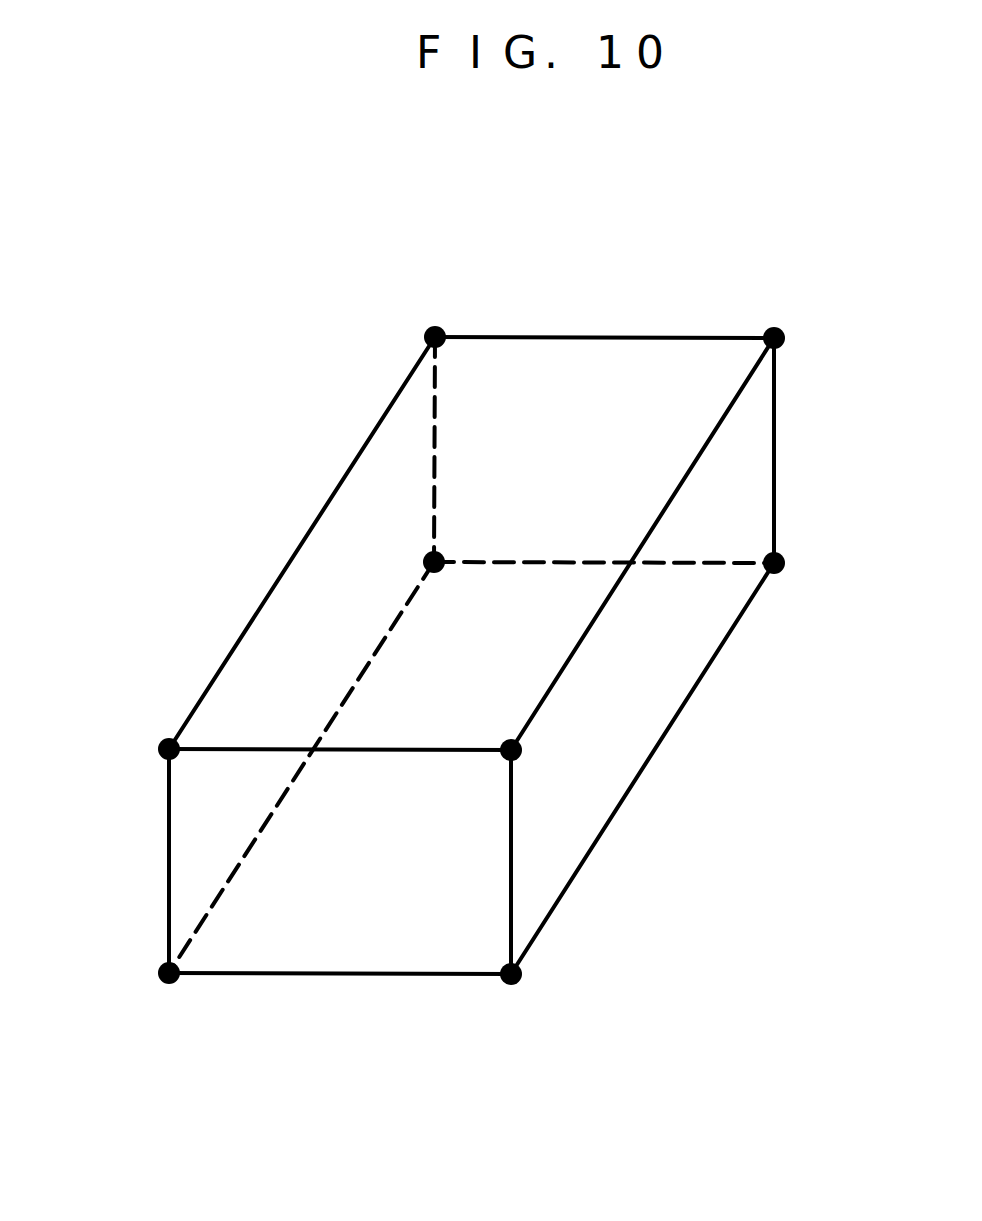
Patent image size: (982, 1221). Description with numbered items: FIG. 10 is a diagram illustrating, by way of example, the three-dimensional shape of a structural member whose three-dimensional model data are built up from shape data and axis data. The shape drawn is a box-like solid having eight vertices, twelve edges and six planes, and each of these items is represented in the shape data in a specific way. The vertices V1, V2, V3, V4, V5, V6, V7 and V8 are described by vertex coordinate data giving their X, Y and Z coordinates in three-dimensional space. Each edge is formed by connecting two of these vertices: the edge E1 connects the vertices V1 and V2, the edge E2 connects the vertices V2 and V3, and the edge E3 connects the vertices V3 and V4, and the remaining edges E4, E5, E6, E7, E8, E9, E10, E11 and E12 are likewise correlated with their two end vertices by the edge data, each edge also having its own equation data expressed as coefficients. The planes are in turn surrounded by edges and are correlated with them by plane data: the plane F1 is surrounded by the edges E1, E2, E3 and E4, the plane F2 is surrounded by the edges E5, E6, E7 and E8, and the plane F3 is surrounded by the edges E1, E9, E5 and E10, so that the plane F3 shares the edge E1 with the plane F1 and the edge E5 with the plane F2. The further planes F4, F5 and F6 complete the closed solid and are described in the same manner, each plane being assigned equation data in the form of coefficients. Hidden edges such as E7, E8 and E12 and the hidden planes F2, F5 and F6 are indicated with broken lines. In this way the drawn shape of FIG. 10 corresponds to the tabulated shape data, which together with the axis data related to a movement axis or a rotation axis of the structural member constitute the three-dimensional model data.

The vertex V1 is at (783, 331).
The vertex V2 is at (505, 740).
The vertex V3 is at (165, 740).
The vertex V4 is at (430, 327).
The vertex V5 is at (781, 557).
The vertex V6 is at (512, 985).
The vertex V7 is at (165, 985).
The vertex V8 is at (427, 545).
The edge E1 is at (572, 656).
The edge E2 is at (370, 752).
The edge E3 is at (260, 602).
The edge E4 is at (565, 333).
The edge E5 is at (672, 723).
The edge E6 is at (302, 977).
The edge E7 is at (318, 738).
The edge E8 is at (532, 558).
The edge E9 is at (777, 467).
The edge E10 is at (510, 858).
The edge E11 is at (168, 858).
The edge E12 is at (435, 448).
The plane F1 is at (503, 365).
The plane F2 is at (390, 918).
The plane F3 is at (688, 632).
The plane F4 is at (265, 938).
The plane F5 is at (332, 603).
The plane F6 is at (668, 440).